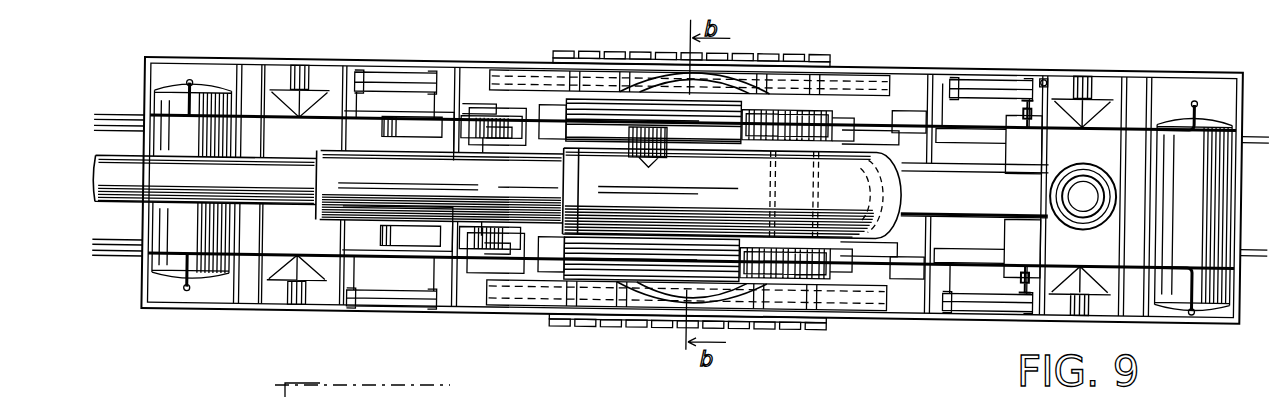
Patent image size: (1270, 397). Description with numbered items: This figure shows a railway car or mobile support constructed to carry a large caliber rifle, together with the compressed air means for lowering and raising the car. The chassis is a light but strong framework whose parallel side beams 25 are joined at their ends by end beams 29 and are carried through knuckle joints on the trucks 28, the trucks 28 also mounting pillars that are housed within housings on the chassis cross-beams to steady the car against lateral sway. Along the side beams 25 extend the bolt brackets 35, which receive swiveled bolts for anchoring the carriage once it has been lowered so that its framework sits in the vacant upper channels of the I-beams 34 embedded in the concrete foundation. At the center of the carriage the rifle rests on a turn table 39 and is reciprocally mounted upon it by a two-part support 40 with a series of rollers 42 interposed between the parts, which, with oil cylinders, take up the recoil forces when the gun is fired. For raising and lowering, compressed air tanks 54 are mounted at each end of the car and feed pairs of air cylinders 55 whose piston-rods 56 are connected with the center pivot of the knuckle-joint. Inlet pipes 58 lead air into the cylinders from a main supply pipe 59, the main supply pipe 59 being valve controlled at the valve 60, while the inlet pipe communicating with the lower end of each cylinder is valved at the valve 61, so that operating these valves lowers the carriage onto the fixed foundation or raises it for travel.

The side beams 25 is at (405, 58).
The trucks 28 is at (477, 252).
The end beams 29 is at (145, 278).
The I-beams 34 is at (863, 290).
The bolt brackets 35 is at (650, 22).
The turn table 39 is at (710, 80).
The two-part support 40 is at (706, 110).
The rollers 42 is at (795, 130).
The compressed air tanks 54 is at (1193, 207).
The air cylinders 55 is at (985, 68).
The piston-rods 56 is at (1047, 68).
The inlet pipes 58 is at (1014, 250).
The main supply pipe 59 is at (1079, 117).
The valve 60 is at (1040, 251).
The valve 61 is at (1026, 92).